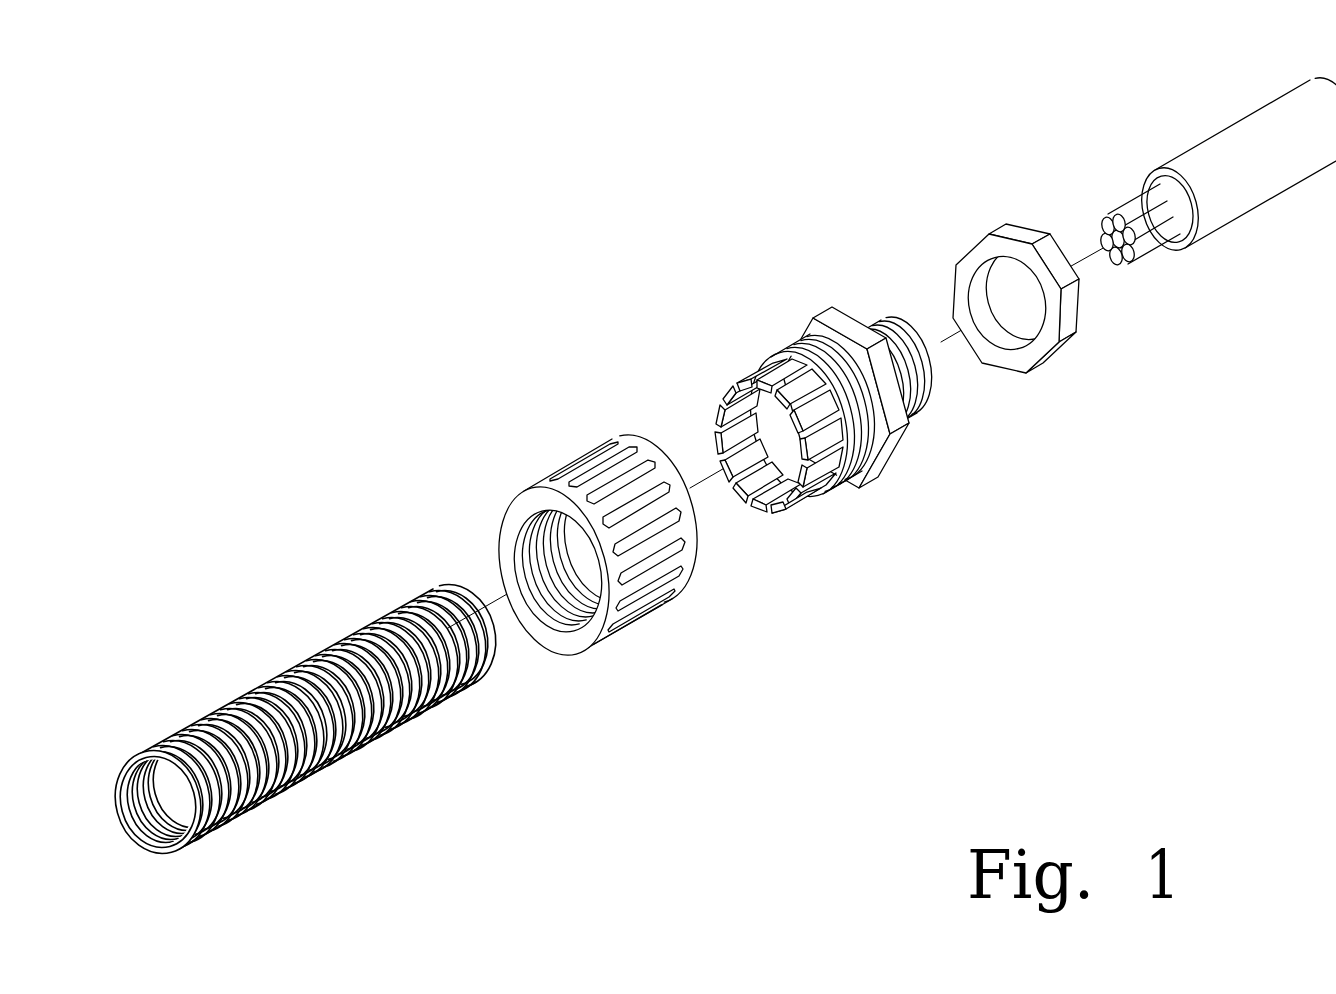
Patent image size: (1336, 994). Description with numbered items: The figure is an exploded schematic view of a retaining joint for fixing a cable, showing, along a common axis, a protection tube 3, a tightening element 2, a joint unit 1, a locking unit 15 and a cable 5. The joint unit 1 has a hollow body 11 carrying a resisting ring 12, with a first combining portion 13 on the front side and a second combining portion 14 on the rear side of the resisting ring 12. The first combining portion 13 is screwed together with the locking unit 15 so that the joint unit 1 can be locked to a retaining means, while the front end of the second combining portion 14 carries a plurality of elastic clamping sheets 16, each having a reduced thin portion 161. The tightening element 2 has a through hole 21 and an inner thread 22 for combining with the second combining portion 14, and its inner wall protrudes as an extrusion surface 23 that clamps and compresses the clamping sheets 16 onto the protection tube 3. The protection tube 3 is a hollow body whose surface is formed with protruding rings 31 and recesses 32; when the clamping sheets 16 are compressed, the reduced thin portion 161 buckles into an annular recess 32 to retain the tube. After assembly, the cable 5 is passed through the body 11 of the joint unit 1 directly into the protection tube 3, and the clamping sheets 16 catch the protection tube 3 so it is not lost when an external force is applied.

The joint unit 1 is at (826, 384).
The hollow body 11 is at (822, 300).
The resisting ring 12 is at (862, 401).
The first combining portion 13 is at (935, 372).
The second combining portion 14 is at (893, 477).
The locking unit 15 is at (1045, 353).
The clamping sheets 16 is at (741, 461).
The reduced thin portion 161 is at (767, 505).
The tightening element 2 is at (563, 526).
The through hole 21 is at (517, 518).
The thread 22 is at (516, 617).
The extrusion surface 23 is at (543, 605).
The protection tube 3 is at (305, 668).
The protruding rings 31 is at (385, 608).
The recesses 32 is at (400, 627).
The cable 5 is at (1253, 135).